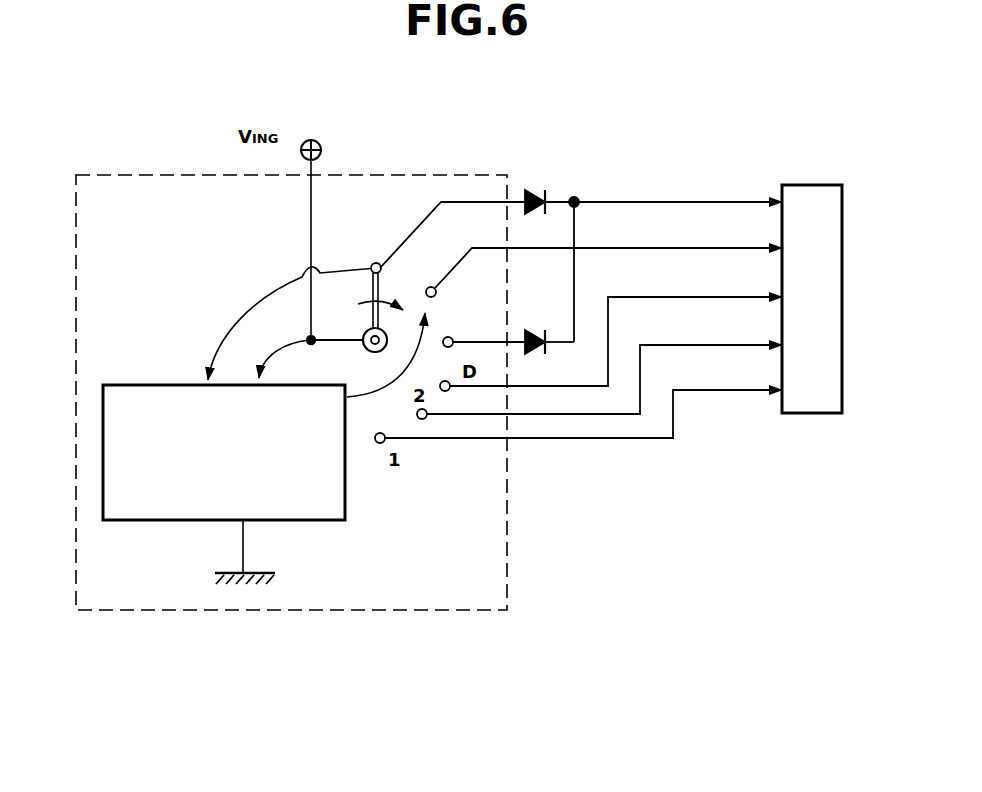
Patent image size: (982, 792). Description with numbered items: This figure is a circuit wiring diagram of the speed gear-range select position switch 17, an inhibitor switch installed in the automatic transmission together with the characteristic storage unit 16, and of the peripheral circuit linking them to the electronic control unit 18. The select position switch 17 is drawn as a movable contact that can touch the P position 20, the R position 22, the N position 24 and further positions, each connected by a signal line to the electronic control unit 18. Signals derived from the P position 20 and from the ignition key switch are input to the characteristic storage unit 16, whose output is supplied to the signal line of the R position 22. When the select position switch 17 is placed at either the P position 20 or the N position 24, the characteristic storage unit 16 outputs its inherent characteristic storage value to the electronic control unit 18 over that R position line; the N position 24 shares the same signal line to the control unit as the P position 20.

The characteristic storage unit 16 is at (173, 513).
The select position switch 17 is at (403, 610).
The electronic control unit 18 is at (808, 186).
The P position 20 is at (373, 263).
The R position 22 is at (428, 287).
The N position 24 is at (447, 337).